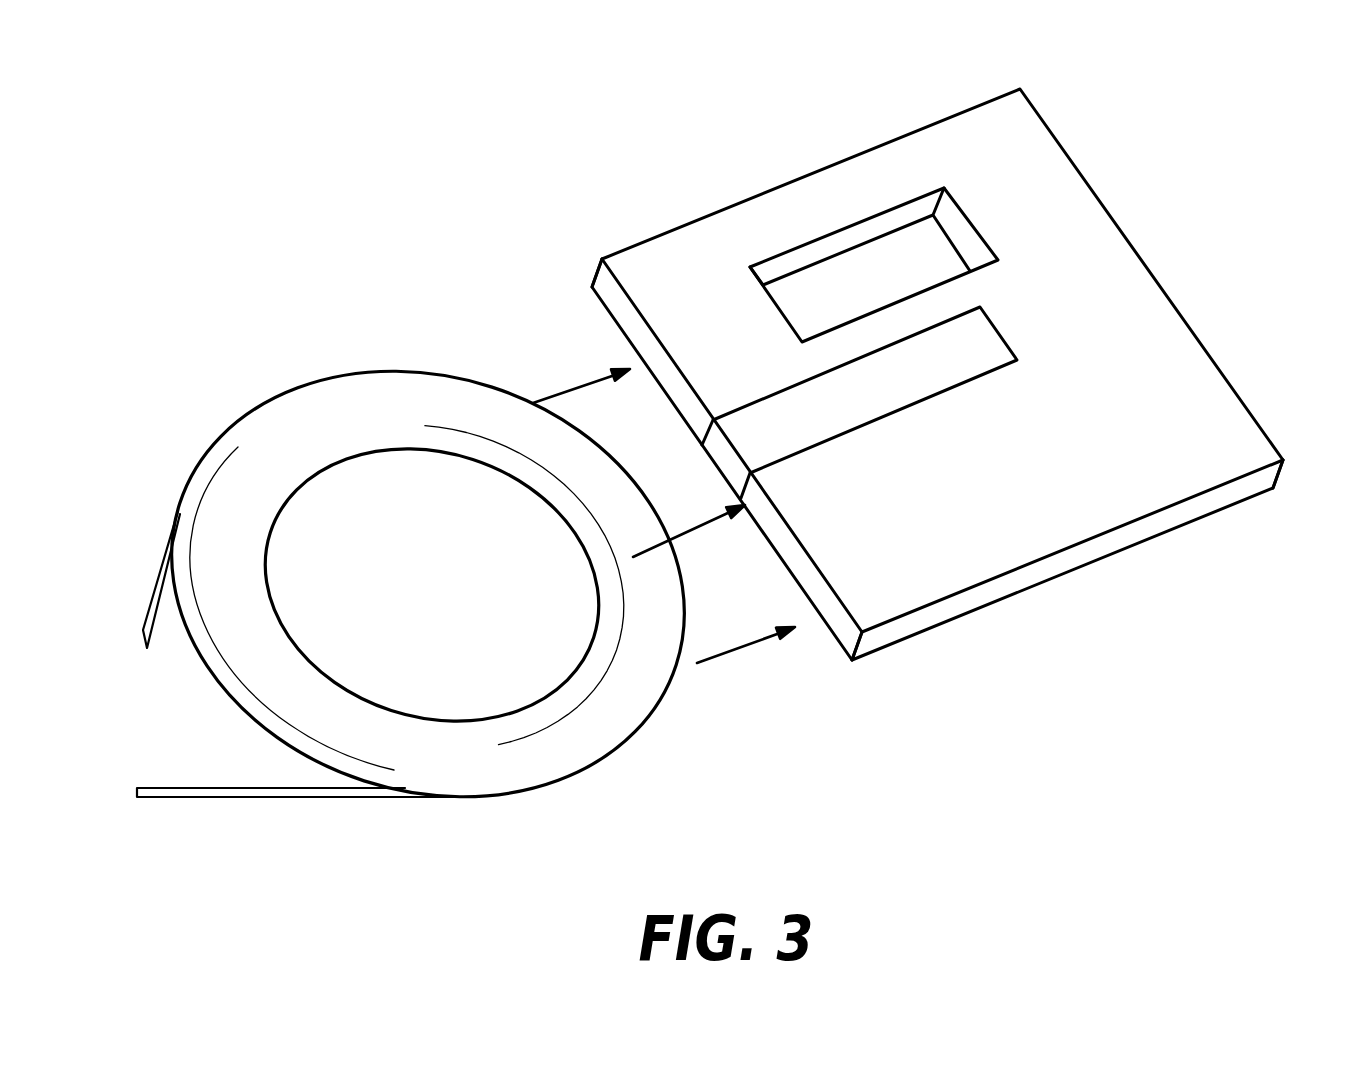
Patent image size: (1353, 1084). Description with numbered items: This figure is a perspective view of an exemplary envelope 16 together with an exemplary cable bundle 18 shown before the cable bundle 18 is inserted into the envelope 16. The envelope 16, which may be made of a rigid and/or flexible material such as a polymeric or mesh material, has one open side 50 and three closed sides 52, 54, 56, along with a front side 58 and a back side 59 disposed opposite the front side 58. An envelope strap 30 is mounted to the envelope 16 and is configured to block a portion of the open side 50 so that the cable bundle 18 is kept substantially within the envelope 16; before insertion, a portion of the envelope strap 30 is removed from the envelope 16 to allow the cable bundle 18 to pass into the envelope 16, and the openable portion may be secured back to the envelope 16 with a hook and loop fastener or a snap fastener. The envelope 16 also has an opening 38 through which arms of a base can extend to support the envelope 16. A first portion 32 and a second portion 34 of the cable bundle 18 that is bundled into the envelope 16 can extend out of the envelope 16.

The envelope 16 is at (947, 373).
The cable bundle 18 is at (452, 765).
The envelope strap 30 is at (775, 413).
The first portion 32 is at (150, 600).
The second portion 34 is at (173, 789).
The opening 38 is at (873, 219).
The open side 50 is at (828, 623).
The closed side 52 is at (1183, 510).
The closed side 54 is at (1282, 466).
The closed side 56 is at (598, 270).
The front side 58 is at (1122, 378).
The back side 59 is at (790, 552).